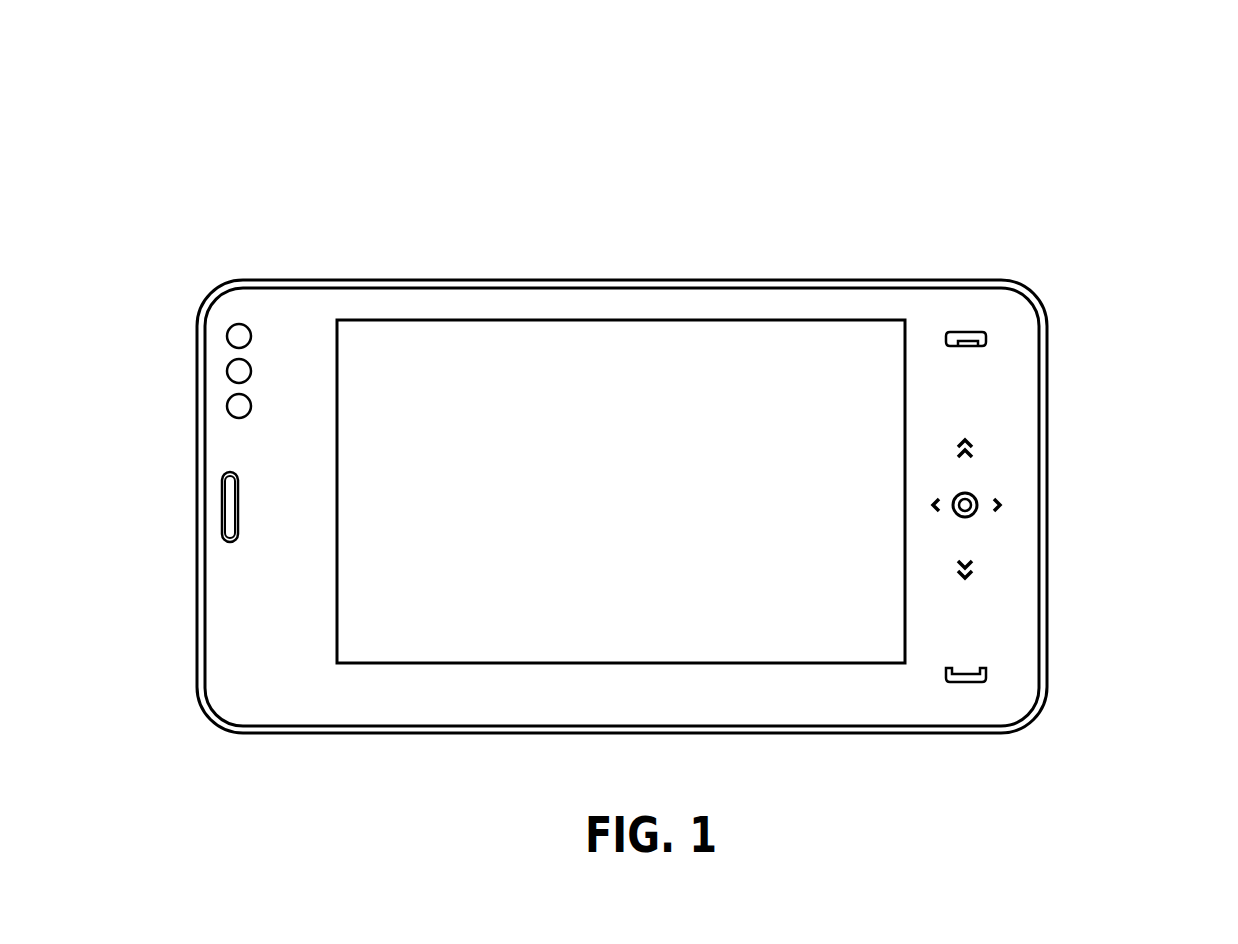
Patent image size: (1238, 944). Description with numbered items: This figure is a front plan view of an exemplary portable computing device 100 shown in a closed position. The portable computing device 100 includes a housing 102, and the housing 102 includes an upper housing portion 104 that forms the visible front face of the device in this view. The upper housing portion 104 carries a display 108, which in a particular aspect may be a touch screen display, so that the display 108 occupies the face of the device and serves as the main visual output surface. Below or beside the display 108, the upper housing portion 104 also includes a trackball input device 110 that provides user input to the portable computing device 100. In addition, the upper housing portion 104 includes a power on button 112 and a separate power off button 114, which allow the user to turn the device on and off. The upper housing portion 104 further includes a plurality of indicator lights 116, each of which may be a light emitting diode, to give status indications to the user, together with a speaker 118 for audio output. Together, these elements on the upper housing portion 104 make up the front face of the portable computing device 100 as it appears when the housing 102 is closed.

The portable computing device 100 is at (1099, 213).
The housing 102 is at (237, 281).
The upper housing portion 104 is at (610, 294).
The display 108 is at (625, 640).
The trackball input device 110 is at (972, 510).
The power on button 112 is at (987, 678).
The power off button 114 is at (987, 338).
The indicator lights 116 is at (228, 315).
The speaker 118 is at (228, 507).